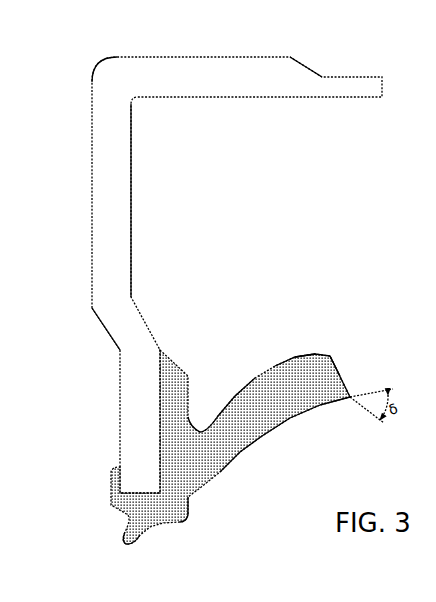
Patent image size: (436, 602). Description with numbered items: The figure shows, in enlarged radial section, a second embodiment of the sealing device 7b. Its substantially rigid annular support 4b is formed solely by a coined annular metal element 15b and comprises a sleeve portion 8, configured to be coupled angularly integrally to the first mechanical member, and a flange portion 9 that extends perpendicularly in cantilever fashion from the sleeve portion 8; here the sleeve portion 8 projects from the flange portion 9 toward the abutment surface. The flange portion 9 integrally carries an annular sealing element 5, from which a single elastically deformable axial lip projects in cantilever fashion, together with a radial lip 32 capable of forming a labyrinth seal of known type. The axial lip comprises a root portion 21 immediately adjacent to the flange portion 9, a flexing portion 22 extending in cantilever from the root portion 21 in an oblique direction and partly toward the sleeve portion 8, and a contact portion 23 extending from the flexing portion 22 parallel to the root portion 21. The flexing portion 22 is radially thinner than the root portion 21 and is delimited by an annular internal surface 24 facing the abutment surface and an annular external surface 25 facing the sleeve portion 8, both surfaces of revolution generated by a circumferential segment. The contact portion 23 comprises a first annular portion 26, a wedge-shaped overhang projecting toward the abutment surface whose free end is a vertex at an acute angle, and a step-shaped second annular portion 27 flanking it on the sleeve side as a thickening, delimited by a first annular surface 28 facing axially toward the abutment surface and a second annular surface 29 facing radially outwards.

The sealing device 7b is at (359, 179).
The sleeve portion 8 is at (205, 56).
The coined annular metal element 15b is at (91, 88).
The annular support 4b is at (150, 143).
The flange portion 9 is at (103, 330).
The annular sealing element 5 is at (168, 528).
The radial lip 32 is at (125, 543).
The root portion 21 is at (200, 487).
The flexing portion 22 is at (238, 452).
The annular internal surface 24 is at (293, 414).
The annular external surface 25 is at (239, 385).
The second annular surface 29 is at (307, 351).
The second annular portion 27 is at (325, 355).
The first annular surface 28 is at (335, 362).
The contact portion 23 is at (329, 385).
The first annular portion 26 is at (350, 400).